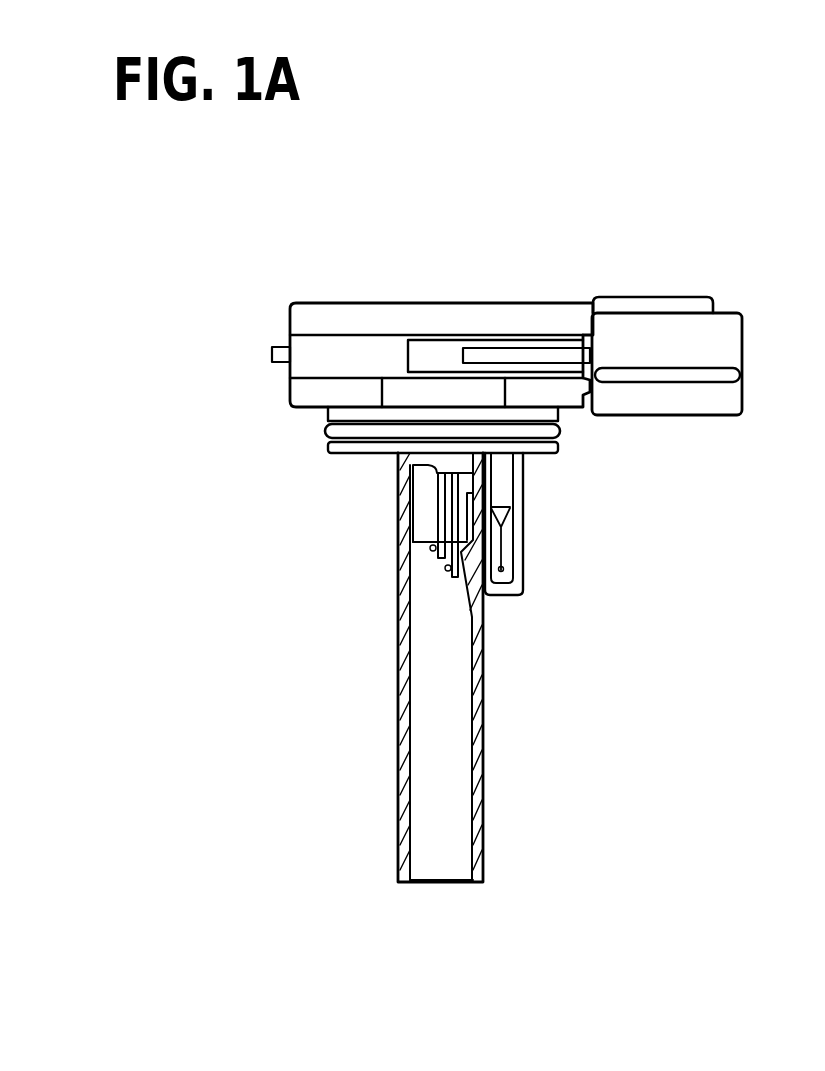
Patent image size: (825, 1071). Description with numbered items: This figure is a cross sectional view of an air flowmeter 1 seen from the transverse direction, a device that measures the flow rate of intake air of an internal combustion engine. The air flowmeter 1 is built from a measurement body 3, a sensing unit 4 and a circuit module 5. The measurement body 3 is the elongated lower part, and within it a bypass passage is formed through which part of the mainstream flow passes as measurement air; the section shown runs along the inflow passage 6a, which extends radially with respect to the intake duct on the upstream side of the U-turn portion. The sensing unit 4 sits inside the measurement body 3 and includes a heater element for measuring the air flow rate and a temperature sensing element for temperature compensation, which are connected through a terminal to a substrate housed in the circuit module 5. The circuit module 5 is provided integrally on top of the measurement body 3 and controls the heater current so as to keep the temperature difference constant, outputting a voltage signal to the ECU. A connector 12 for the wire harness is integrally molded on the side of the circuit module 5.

The air flowmeter 1 is at (543, 285).
The measurement body 3 is at (400, 727).
The sensing unit 4 is at (427, 544).
The circuit module 5 is at (392, 310).
The inflow passage 6a is at (455, 792).
The connector 12 is at (733, 317).